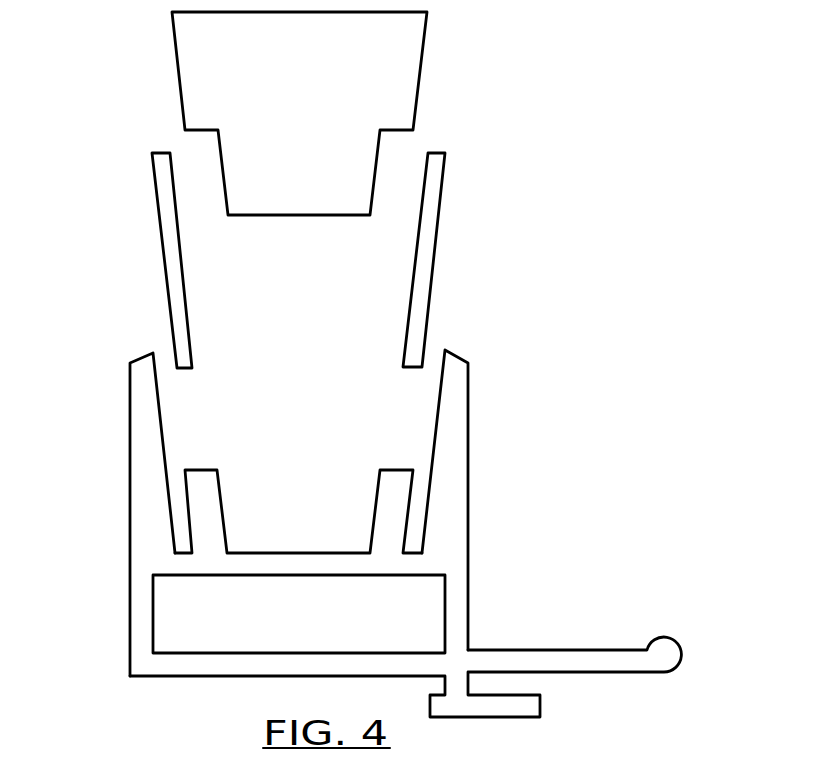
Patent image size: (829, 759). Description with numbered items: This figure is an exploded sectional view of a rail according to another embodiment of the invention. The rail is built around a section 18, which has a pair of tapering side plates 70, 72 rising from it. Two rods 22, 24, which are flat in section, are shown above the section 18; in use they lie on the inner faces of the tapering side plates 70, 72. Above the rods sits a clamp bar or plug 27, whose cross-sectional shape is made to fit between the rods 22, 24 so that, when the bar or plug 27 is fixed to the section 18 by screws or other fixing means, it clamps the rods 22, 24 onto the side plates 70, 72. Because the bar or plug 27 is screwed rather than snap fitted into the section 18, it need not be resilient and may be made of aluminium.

The clamp bar or plug 27 is at (392, 47).
The rod 22 is at (168, 240).
The rod 24 is at (430, 232).
The tapering side plate 70 is at (145, 412).
The tapering side plate 72 is at (452, 452).
The section 18 is at (459, 593).